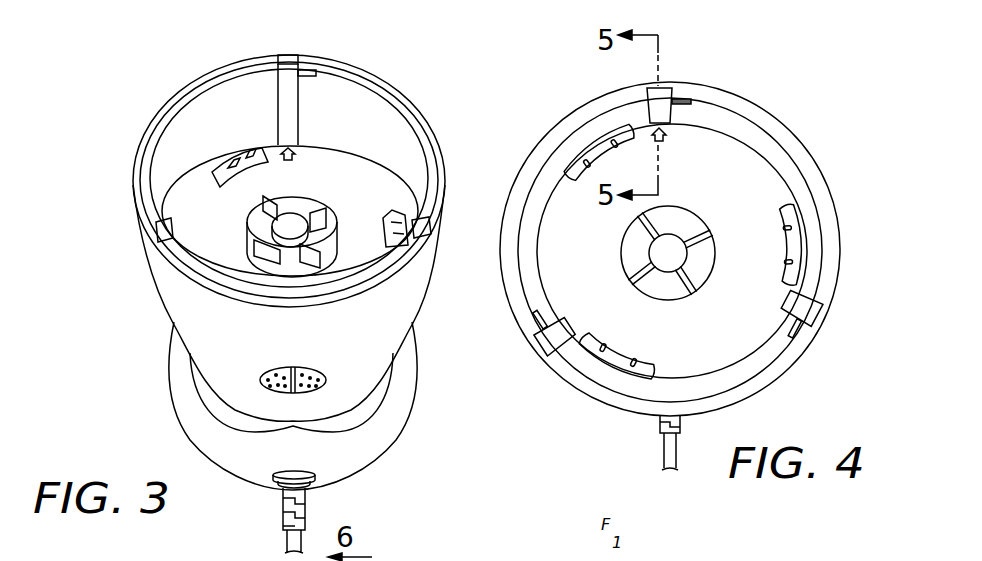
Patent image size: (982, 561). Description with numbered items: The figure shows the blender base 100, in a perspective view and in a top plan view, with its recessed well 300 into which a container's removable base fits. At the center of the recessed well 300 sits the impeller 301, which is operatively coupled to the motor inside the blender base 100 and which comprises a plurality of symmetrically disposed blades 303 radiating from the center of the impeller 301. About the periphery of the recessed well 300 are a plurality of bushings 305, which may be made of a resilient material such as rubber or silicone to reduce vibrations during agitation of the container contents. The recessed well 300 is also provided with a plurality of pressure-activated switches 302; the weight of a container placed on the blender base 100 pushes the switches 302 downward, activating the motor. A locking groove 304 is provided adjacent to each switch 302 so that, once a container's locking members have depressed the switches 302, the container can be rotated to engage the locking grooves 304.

In FIG. 3, the blender base 100 is at (172, 296).
In FIG. 4, the blender base 100 is at (797, 133).
In FIG. 3, the recessed well 300 is at (390, 210).
In FIG. 4, the recessed well 300 is at (720, 178).
In FIG. 3, the impeller 301 is at (289, 222).
In FIG. 4, the impeller 301 is at (670, 255).
In FIG. 3, the pressure-activated switches 302 is at (287, 95).
In FIG. 4, the pressure-activated switches 302 is at (662, 100).
In FIG. 3, the blades 303 is at (320, 212).
In FIG. 4, the blades 303 is at (643, 216).
In FIG. 3, the locking groove 304 is at (305, 70).
In FIG. 4, the locking groove 304 is at (535, 308).
In FIG. 3, the bushings 305 is at (238, 162).
In FIG. 4, the bushings 305 is at (600, 152).